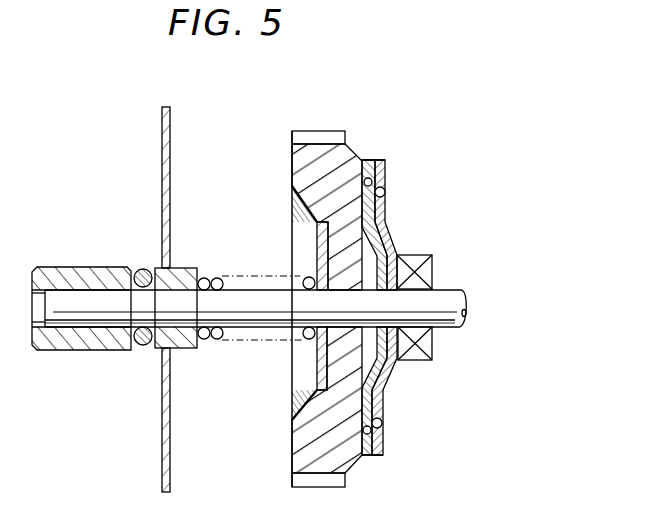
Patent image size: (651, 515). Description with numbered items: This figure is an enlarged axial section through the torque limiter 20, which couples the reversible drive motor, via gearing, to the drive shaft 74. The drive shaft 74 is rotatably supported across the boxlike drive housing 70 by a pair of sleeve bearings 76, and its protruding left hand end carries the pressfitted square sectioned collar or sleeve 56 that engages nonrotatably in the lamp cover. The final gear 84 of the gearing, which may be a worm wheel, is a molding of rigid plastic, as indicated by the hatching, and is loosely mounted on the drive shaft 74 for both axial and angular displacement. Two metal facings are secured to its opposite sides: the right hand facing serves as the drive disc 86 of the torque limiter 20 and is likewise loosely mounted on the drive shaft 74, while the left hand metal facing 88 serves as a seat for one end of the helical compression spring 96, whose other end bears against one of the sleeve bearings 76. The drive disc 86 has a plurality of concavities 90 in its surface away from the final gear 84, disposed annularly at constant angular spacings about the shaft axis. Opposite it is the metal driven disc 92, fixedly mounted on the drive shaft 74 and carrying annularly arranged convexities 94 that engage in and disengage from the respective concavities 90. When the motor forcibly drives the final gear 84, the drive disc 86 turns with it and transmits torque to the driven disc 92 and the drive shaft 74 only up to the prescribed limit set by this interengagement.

The torque limiter 20 is at (353, 281).
The square sectioned collar or sleeve 56 is at (67, 351).
The drive housing 70 is at (160, 452).
The drive shaft 74 is at (452, 327).
The sleeve bearings 76 is at (186, 267).
The final gear 84 is at (292, 134).
The drive disc 86 is at (372, 160).
The left hand metal facing 88 is at (292, 237).
The concavities 90 is at (385, 192).
The driven disc 92 is at (386, 215).
The convexities 94 is at (386, 165).
The helical compression spring 96 is at (218, 340).